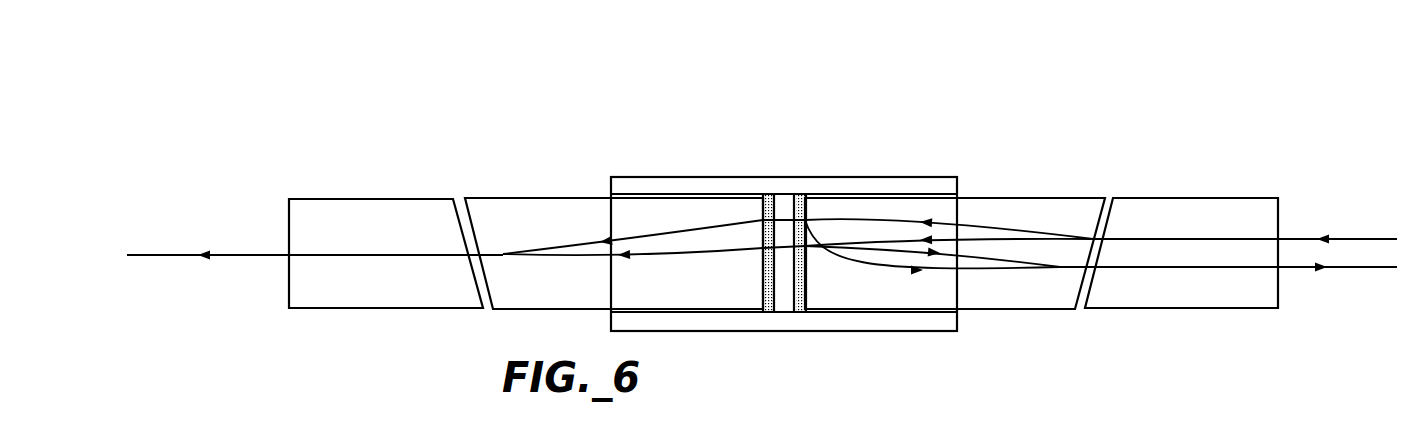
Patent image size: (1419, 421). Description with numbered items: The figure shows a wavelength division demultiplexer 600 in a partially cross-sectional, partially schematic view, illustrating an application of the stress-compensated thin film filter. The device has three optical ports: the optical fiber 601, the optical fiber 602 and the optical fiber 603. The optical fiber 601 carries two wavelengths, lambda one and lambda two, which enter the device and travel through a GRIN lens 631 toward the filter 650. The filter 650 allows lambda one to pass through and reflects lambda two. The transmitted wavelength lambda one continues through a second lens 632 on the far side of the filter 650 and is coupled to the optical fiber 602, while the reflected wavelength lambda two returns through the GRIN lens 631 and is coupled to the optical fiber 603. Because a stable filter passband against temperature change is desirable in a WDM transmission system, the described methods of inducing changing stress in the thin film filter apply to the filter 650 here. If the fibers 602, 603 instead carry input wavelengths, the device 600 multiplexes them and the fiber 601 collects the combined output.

The wavelength division demultiplexer 600 is at (503, 106).
The optical fiber 601 is at (1303, 232).
The optical fiber 602 is at (254, 248).
The optical fiber 603 is at (1124, 278).
The GRIN lens 631 is at (989, 189).
The second lens block 632 is at (559, 191).
The filter 650 is at (783, 186).